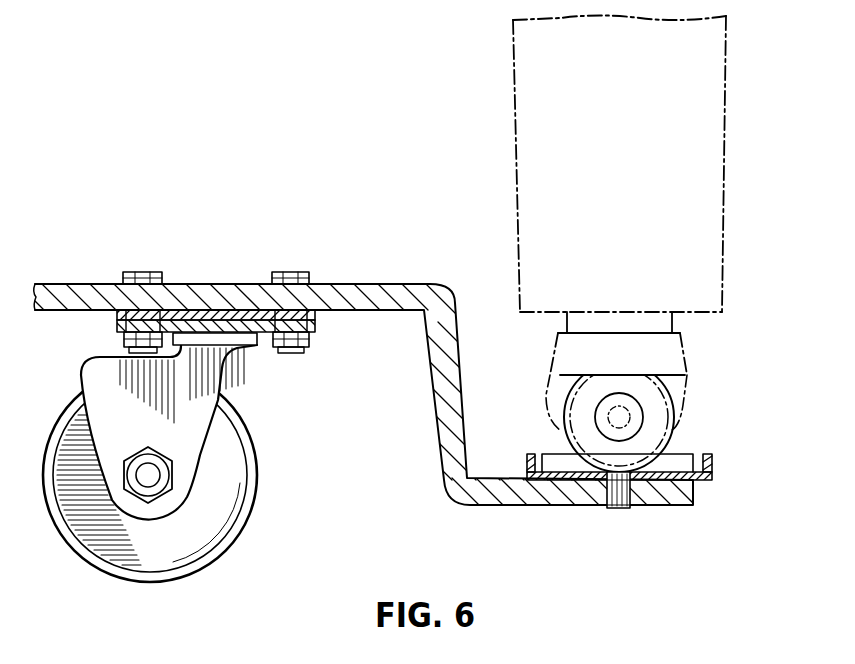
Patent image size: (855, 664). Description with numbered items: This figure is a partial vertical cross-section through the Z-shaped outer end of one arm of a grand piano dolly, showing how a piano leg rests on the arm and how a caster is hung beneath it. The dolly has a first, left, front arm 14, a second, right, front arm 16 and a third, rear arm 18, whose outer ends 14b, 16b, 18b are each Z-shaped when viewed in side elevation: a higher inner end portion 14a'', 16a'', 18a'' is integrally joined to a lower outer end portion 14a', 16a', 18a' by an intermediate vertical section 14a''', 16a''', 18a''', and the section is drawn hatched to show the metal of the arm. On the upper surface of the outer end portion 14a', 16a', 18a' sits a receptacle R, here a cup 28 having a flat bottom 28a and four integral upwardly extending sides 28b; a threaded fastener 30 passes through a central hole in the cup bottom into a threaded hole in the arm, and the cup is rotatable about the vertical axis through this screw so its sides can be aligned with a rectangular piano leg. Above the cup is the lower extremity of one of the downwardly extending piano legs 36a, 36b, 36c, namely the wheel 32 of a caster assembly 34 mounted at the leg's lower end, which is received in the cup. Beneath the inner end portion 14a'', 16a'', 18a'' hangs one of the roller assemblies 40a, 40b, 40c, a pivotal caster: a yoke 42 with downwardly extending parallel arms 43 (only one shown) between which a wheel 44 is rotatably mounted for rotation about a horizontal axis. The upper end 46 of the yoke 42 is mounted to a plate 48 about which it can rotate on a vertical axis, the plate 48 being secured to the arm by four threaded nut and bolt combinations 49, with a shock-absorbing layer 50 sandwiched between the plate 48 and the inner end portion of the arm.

The first, left, front arm 14 is at (368, 375).
The second, right, front arm 16 is at (368, 375).
The third, rear arm 18 is at (368, 375).
The outer end of arm 14b is at (223, 248).
The outer end of arm 16b is at (223, 248).
The outer end of arm 18b is at (344, 279).
The inner end portion 14a'' is at (423, 274).
The inner end portion 16a'' is at (423, 274).
The inner end portion 18a'' is at (423, 274).
The intermediate vertical section 14a''' is at (433, 401).
The intermediate vertical section 16a''' is at (433, 401).
The intermediate vertical section 18a''' is at (433, 401).
The outer end portion 14a' is at (557, 520).
The outer end portion 16a' is at (557, 520).
The outer end portion 18a' is at (557, 520).
The piano leg 36a is at (533, 164).
The piano leg 36b is at (533, 164).
The piano leg 36c is at (513, 86).
The caster assembly 34 is at (688, 346).
The wheel 32 is at (680, 405).
The cup 28 is at (622, 427).
The flat bottom 28a is at (562, 466).
The upwardly extending sides 28b is at (527, 467).
The receptacle R is at (693, 434).
The threaded fastener 30 is at (618, 510).
The threaded nut and bolt combinations 49 is at (140, 272).
The plate 48 is at (187, 324).
The shock-absorbing layer 50 is at (236, 316).
The upper end of yoke 46 is at (250, 347).
The yoke 42 is at (78, 383).
The parallel arms of yoke 43 is at (157, 416).
The wheel 44 is at (101, 568).
The roller assembly 40a is at (150, 491).
The roller assembly 40b is at (150, 491).
The roller assembly 40c is at (150, 491).